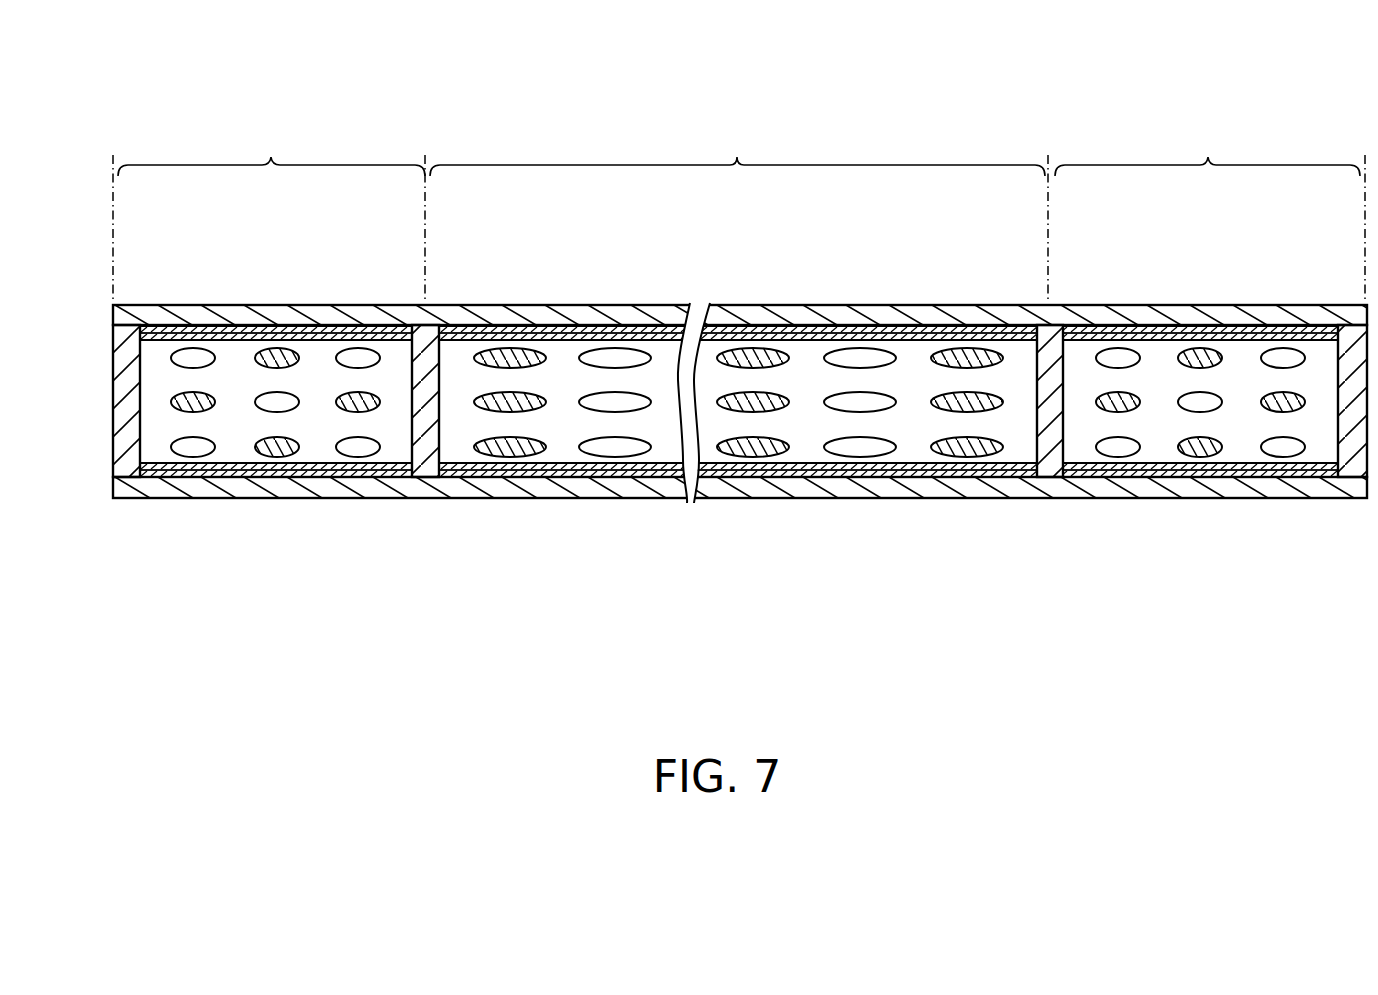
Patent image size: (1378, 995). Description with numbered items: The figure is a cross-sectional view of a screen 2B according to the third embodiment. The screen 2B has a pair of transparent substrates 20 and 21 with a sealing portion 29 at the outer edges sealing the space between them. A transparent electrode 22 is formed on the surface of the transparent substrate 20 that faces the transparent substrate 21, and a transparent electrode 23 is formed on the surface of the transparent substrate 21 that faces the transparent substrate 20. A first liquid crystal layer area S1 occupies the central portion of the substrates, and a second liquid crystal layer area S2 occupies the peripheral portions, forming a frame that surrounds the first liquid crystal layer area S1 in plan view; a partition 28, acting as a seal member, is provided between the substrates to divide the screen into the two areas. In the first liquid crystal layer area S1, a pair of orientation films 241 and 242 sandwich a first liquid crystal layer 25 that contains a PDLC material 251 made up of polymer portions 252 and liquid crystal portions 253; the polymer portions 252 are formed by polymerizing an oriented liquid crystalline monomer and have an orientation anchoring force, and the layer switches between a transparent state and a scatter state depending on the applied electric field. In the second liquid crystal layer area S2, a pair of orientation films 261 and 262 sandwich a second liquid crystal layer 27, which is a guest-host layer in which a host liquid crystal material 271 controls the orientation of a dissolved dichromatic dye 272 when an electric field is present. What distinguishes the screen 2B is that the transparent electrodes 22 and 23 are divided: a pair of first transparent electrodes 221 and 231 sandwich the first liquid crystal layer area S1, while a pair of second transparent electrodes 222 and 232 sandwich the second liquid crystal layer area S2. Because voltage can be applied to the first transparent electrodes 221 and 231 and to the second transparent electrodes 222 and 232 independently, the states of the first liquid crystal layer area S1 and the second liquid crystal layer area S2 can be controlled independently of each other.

The screen 2B is at (896, 106).
The transparent substrate 20 is at (558, 315).
The transparent substrate 21 is at (565, 490).
The transparent electrode 22 is at (736, 281).
The first transparent electrode 221 is at (738, 281).
The second transparent electrode 222 is at (736, 281).
The transparent electrode 23 is at (721, 546).
The first transparent electrode 231 is at (737, 546).
The second transparent electrode 232 is at (721, 546).
The orientation film 241 is at (655, 330).
The orientation film 242 is at (620, 470).
The first liquid crystal layer 25 is at (738, 530).
The PDLC material 251 is at (738, 530).
The polymer portions 252 is at (852, 404).
The liquid crystal portions 253 is at (770, 404).
The orientation film 261 is at (283, 336).
The orientation film 262 is at (242, 470).
The second liquid crystal layer 27 is at (738, 488).
The liquid crystal material 271 is at (366, 448).
The dichromatic dye 272 is at (358, 410).
The partition 28 is at (413, 305).
The sealing portion 29 is at (120, 378).
The first liquid crystal layer area S1 is at (736, 214).
The second liquid crystal layer area S2 is at (739, 214).